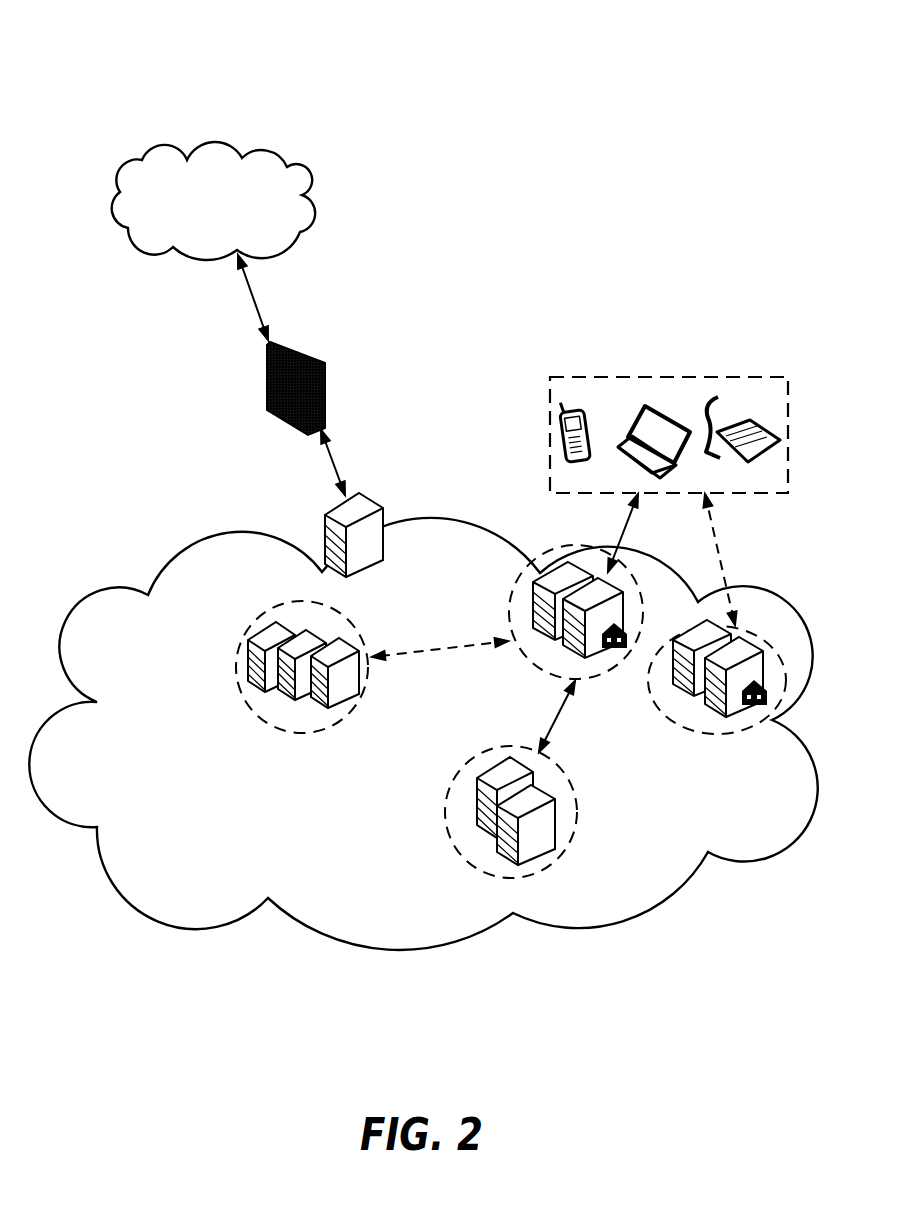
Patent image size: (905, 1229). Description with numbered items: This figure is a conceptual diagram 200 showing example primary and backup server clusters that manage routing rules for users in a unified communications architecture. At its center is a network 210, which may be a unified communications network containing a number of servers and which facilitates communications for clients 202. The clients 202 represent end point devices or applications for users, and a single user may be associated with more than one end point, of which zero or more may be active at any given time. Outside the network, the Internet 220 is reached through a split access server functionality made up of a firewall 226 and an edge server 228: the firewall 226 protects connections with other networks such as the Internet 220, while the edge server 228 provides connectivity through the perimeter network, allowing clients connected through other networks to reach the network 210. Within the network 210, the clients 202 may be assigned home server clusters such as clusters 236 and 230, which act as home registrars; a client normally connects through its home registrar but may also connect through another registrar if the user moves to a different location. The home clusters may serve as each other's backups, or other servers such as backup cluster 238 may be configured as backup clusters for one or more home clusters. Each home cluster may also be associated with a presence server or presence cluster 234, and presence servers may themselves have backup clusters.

The diagram 200 is at (675, 60).
The clients 202 is at (608, 373).
The network 210 is at (302, 952).
The Internet 220 is at (168, 145).
The firewall 226 is at (263, 350).
The edge server 228 is at (335, 505).
The home cluster 230 is at (705, 742).
The presence cluster 234 is at (505, 747).
The home cluster 236 is at (512, 580).
The backup cluster 238 is at (268, 600).